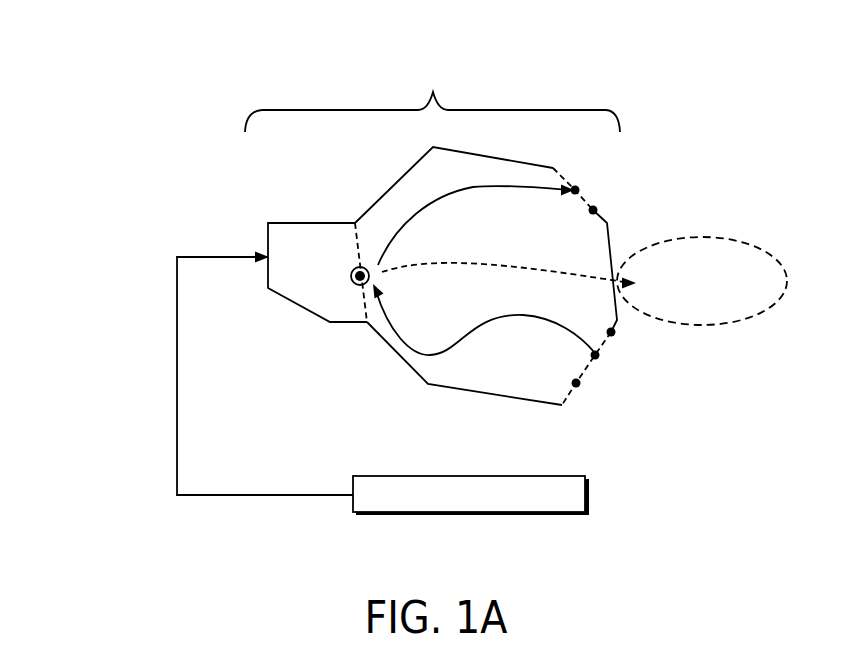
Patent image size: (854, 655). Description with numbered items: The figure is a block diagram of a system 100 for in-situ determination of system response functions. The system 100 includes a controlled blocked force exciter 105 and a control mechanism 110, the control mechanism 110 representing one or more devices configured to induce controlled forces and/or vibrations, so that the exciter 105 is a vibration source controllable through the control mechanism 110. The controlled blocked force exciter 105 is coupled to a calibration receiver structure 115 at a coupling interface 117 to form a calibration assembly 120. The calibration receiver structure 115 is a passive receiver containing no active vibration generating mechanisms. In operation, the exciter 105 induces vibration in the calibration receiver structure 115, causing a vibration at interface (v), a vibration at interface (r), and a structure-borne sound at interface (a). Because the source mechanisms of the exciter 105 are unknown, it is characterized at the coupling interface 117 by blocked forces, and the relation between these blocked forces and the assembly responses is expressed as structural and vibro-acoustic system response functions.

The system 100 is at (108, 160).
The controlled blocked force exciter 105 is at (310, 295).
The control mechanism 110 is at (353, 485).
The calibration receiver structure 115 is at (433, 385).
The coupling interface 117 is at (365, 323).
The calibration assembly 120 is at (433, 93).